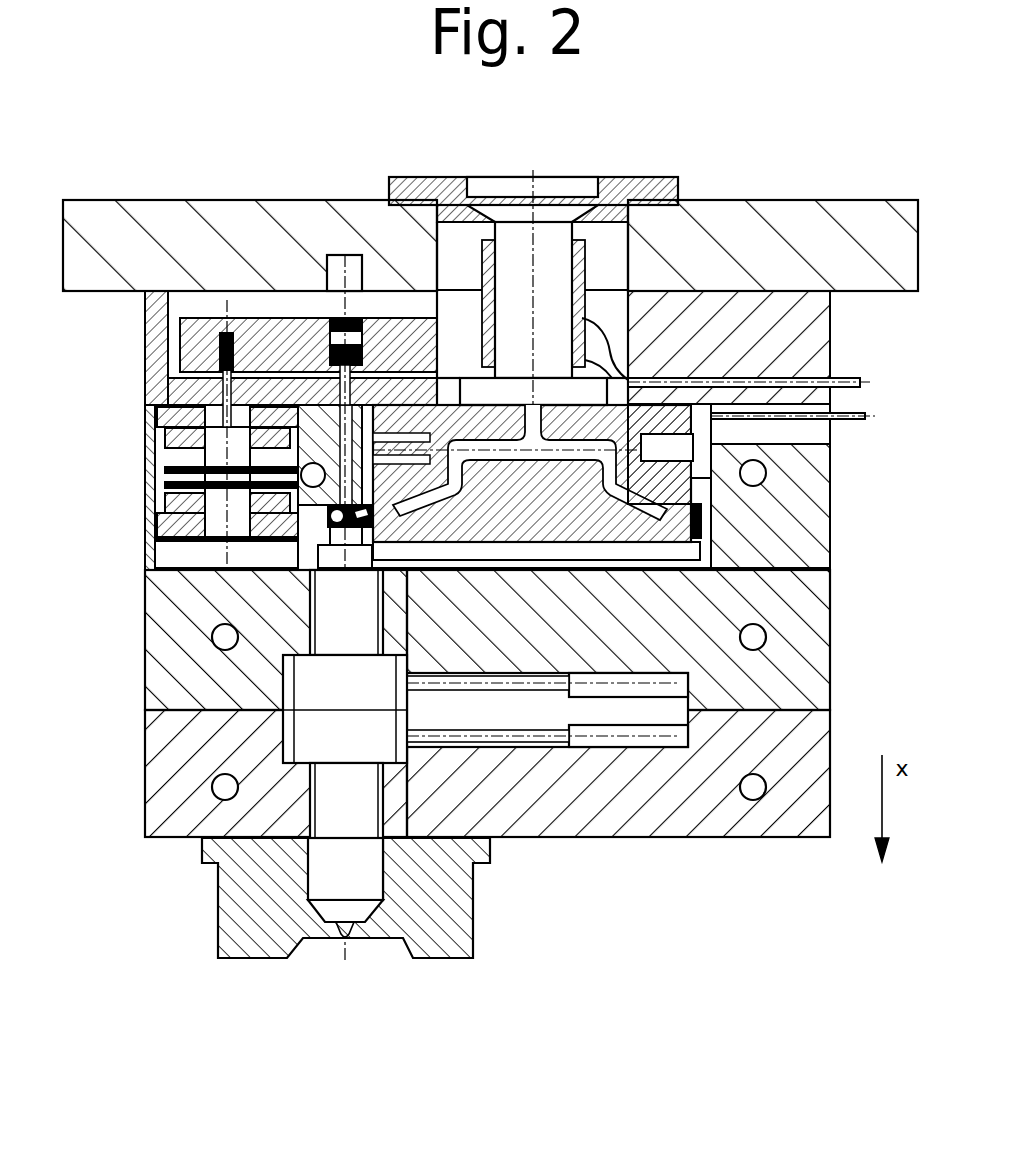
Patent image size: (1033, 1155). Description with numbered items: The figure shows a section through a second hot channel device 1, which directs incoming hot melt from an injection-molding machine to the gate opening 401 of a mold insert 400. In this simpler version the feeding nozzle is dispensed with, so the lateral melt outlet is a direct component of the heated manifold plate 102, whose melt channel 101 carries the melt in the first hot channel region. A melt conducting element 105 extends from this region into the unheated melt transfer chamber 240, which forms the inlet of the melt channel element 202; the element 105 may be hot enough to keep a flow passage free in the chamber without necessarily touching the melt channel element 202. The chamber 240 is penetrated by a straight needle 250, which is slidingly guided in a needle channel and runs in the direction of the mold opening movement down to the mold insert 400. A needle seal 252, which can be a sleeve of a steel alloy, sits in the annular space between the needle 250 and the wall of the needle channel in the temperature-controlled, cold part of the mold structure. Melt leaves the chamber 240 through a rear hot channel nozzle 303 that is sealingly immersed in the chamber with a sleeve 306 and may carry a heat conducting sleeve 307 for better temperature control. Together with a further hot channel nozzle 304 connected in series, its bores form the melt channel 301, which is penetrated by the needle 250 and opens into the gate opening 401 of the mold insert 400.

The hot channel device 1 is at (288, 124).
The melt channel 101 is at (621, 385).
The manifold plate 102 is at (396, 418).
The melt conducting element 105 is at (327, 508).
The melt channel element 202 is at (250, 423).
The melt transfer chamber 240 is at (250, 510).
The needle 250 is at (340, 377).
The needle seal 252 is at (263, 487).
The melt channel 301 is at (340, 790).
The rear hot channel nozzle 303 is at (333, 623).
The hot channel nozzle 304 is at (330, 815).
The sleeve 306 is at (373, 535).
The heat conducting sleeve 307 is at (340, 553).
The mold insert 400 is at (282, 878).
The gate opening 401 is at (318, 946).